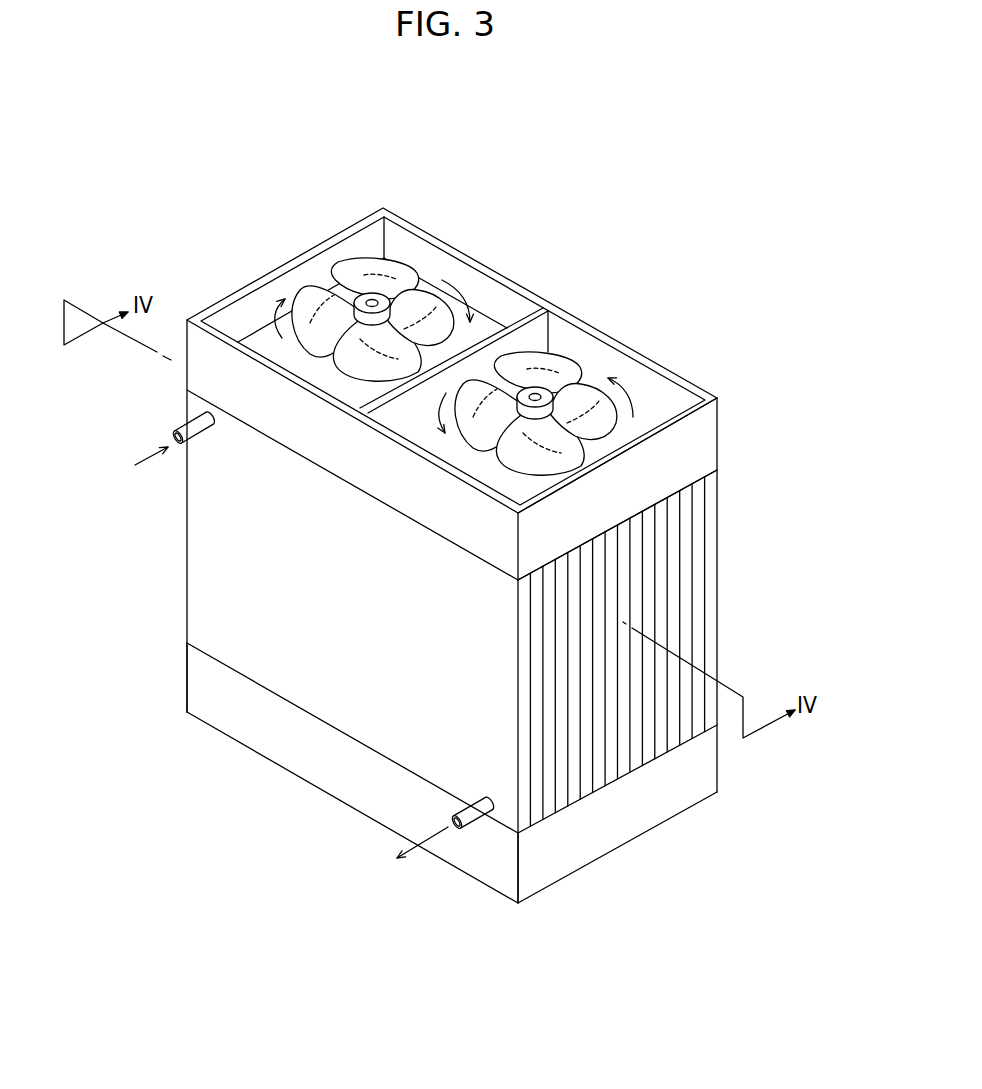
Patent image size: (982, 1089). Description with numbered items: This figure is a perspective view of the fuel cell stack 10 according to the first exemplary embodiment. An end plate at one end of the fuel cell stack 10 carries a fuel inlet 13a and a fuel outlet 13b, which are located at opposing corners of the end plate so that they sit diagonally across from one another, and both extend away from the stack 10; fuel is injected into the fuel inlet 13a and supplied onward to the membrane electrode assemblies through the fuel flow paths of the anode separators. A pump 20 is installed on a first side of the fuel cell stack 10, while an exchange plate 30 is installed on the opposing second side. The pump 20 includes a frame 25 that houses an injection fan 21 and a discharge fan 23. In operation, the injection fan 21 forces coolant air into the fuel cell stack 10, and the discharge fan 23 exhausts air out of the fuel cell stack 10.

The fuel cell stack 10 is at (273, 136).
The pump 20 is at (505, 257).
The injection fan 21 is at (391, 266).
The discharge fan 23 is at (560, 367).
The frame 25 is at (670, 377).
The exchange plate 30 is at (318, 762).
The fuel inlet 13a is at (184, 430).
The fuel outlet 13b is at (472, 818).